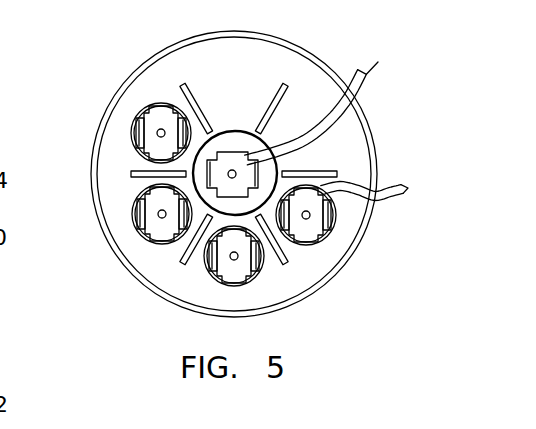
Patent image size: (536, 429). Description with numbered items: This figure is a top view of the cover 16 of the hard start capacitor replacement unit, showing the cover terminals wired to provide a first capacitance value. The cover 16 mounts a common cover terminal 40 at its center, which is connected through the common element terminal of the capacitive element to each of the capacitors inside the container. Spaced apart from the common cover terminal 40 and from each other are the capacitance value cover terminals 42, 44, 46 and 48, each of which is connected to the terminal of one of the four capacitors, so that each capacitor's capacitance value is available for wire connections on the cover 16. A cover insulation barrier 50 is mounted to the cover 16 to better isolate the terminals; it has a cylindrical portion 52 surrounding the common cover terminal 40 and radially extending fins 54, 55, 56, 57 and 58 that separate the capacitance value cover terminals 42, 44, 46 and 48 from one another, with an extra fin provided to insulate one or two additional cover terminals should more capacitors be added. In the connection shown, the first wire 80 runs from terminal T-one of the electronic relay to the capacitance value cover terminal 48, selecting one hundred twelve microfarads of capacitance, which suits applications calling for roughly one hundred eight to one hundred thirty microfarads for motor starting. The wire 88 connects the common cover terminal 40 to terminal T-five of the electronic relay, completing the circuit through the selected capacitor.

The cover 16 is at (289, 296).
The common cover terminal 40 is at (245, 147).
The capacitance value cover terminal 42 is at (136, 118).
The capacitance value cover terminal 44 is at (138, 200).
The capacitance value cover terminal 46 is at (262, 286).
The capacitance value cover terminal 48 is at (333, 232).
The cover insulation barrier 50 is at (171, 253).
The cylindrical portion 52 is at (231, 130).
The radial extending fin 54 is at (213, 77).
The radial extending fin 55 is at (113, 152).
The radial extending fin 56 is at (185, 263).
The radial extending fin 57 is at (288, 250).
The radial extending fin 58 is at (306, 168).
The first wire 80 is at (393, 188).
The wire 88 is at (352, 68).